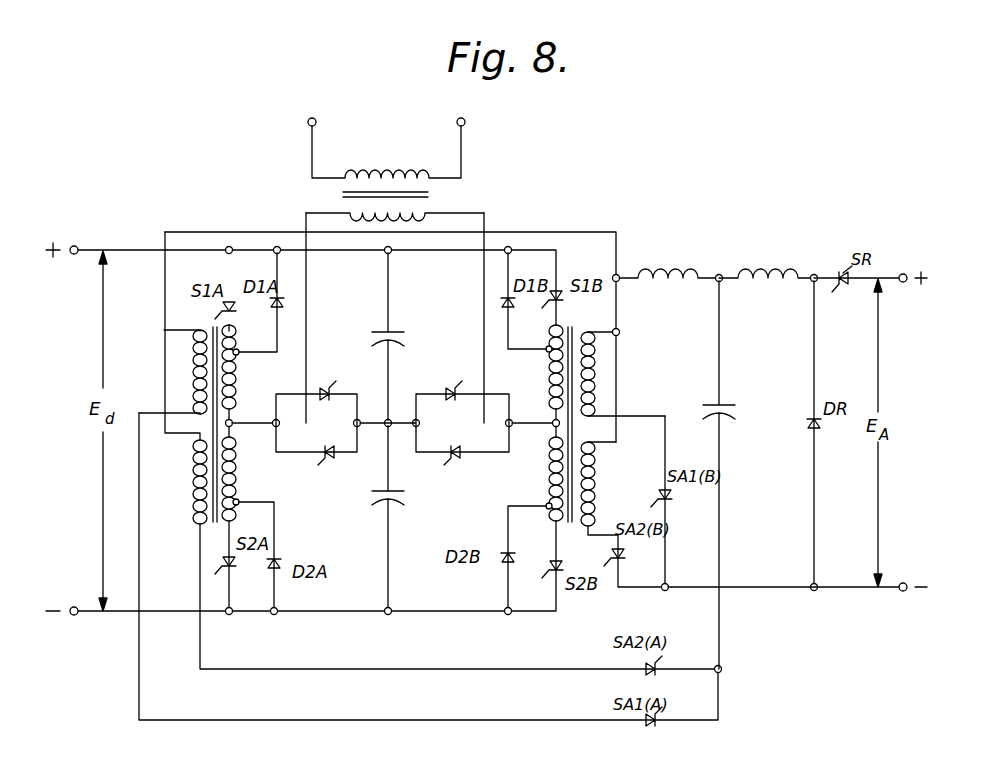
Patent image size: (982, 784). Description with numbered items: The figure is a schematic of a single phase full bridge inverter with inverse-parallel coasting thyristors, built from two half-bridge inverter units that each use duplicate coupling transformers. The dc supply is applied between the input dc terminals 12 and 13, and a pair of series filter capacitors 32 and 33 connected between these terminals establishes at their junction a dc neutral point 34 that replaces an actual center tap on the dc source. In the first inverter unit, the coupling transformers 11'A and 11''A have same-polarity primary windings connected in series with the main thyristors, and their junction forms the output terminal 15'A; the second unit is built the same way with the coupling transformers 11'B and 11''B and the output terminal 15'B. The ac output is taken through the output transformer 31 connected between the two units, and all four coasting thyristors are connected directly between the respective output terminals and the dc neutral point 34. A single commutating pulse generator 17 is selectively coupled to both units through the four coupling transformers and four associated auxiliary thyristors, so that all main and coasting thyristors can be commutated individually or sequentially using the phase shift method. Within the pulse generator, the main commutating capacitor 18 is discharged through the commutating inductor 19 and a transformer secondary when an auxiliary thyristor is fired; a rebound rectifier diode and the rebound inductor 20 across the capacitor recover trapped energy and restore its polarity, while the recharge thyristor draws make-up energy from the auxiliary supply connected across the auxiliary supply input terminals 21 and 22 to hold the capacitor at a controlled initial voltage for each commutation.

The input dc terminal 12 is at (77, 246).
The input dc terminal 13 is at (74, 615).
The coupling transformer 11'A is at (194, 414).
The coupling transformer 11''A is at (181, 508).
The output terminal 15'A is at (250, 468).
The coupling transformer 11'B is at (540, 423).
The coupling transformer 11''B is at (532, 479).
The output terminal 15'B is at (609, 432).
The AC output transformer 31 is at (445, 196).
The series filter capacitor 32 is at (396, 340).
The series filter capacitor 33 is at (383, 496).
The dc neutral point 34 is at (386, 430).
The commutating pulse generator 17 is at (722, 272).
The main commutating capacitor 18 is at (738, 406).
The commutating inductor 19 is at (667, 270).
The rebound inductor 20 is at (780, 268).
The auxiliary supply input terminal 21 is at (903, 274).
The auxiliary supply input terminal 22 is at (903, 591).